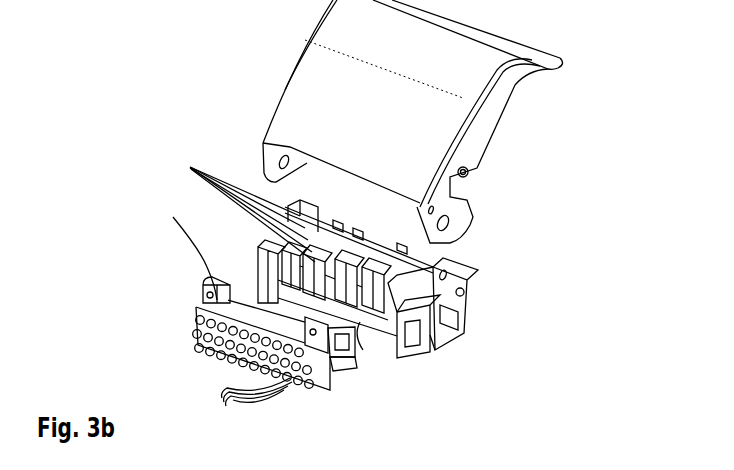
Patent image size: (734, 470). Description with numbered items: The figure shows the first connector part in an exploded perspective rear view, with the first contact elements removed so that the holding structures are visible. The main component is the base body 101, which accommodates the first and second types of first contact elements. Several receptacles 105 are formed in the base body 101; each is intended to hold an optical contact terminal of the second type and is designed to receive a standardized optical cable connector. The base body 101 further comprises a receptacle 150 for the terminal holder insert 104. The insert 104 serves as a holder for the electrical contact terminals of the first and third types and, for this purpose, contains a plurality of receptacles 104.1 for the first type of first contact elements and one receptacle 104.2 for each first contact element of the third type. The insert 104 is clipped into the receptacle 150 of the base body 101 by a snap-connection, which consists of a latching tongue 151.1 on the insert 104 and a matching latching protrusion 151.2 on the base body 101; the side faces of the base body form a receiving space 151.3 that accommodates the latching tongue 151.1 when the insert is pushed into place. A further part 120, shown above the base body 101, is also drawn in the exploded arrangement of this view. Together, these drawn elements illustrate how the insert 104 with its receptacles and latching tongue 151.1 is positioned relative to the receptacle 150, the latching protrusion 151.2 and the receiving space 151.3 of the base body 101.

The cover 120 is at (353, 75).
The receptacle 105 is at (190, 167).
The receptacle 104.2 is at (305, 318).
The base body 101 is at (467, 283).
The receptacle 150 is at (363, 327).
The receiving space 151.3 is at (400, 333).
The latching protrusion 151.2 is at (433, 340).
The terminal holder insert 104 is at (197, 300).
The receptacles 104.1 is at (222, 398).
The latching tongue 151.1 is at (347, 367).